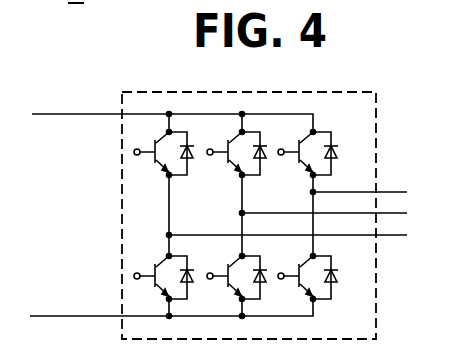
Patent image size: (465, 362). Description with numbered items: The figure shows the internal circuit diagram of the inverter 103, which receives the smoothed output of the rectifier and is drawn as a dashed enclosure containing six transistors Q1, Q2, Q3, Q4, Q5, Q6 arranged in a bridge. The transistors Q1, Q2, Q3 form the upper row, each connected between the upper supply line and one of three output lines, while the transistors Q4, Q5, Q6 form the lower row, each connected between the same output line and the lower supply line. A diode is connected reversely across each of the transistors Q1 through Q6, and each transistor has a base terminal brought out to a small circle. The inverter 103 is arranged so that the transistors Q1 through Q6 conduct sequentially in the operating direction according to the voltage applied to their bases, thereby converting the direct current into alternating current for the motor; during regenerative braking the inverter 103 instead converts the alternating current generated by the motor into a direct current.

The inverter 103 is at (333, 92).
The transistor Q1 is at (172, 171).
The transistor Q2 is at (247, 171).
The transistor Q3 is at (321, 163).
The transistor Q4 is at (177, 287).
The transistor Q5 is at (250, 287).
The transistor Q6 is at (322, 291).